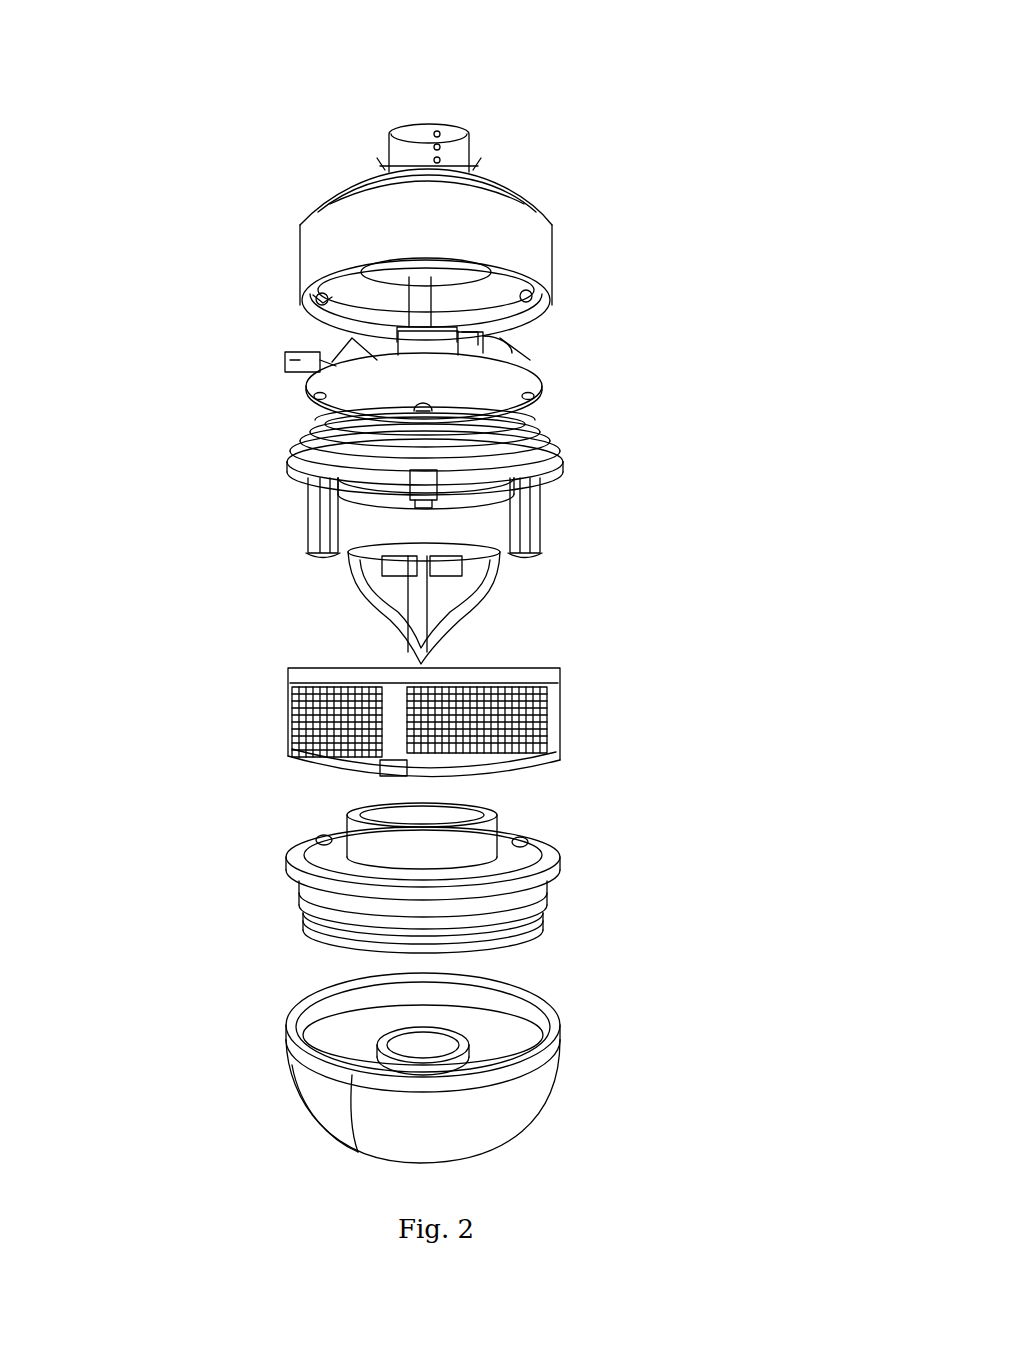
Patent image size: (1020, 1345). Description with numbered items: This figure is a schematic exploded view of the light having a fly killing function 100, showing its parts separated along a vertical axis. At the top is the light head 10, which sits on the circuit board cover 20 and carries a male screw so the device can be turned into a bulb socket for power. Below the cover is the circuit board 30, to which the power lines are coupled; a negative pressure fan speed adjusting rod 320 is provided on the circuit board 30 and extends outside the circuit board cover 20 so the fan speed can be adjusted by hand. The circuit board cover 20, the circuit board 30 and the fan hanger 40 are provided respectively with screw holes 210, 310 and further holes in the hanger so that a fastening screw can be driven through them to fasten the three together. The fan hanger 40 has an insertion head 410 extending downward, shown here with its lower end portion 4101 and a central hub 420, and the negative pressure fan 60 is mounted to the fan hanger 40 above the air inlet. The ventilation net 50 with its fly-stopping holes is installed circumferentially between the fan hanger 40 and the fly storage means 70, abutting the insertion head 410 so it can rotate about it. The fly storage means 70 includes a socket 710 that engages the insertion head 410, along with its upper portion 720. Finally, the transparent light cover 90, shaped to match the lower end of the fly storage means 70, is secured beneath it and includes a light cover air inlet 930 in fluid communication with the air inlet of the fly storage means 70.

The light having a fly killing function 100 is at (434, 108).
The light head 10 is at (478, 150).
The circuit board cover 20 is at (429, 257).
The screw hole 210 is at (318, 298).
The circuit board 30 is at (353, 359).
The screw hole 310 is at (312, 395).
The negative pressure fan speed adjusting rod 320 is at (288, 365).
The fan hanger 40 is at (496, 520).
The insertion head 410 is at (530, 530).
The leg foot 4101 is at (542, 552).
The inner cylinder of support ring 420 is at (428, 492).
The negative pressure fan 60 is at (380, 620).
The ventilation net 50 is at (566, 724).
The fly storage means 70 is at (435, 835).
The inner sleeve of base ring 720 is at (348, 818).
The socket 710 is at (526, 842).
The transparent light cover 90 is at (429, 1068).
The light cover air inlet 930 is at (410, 1056).